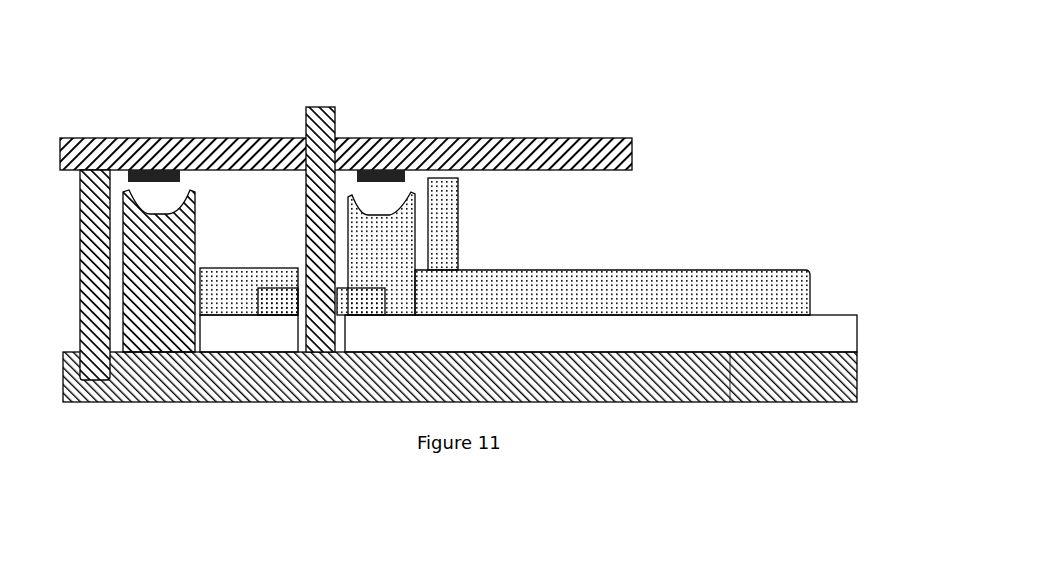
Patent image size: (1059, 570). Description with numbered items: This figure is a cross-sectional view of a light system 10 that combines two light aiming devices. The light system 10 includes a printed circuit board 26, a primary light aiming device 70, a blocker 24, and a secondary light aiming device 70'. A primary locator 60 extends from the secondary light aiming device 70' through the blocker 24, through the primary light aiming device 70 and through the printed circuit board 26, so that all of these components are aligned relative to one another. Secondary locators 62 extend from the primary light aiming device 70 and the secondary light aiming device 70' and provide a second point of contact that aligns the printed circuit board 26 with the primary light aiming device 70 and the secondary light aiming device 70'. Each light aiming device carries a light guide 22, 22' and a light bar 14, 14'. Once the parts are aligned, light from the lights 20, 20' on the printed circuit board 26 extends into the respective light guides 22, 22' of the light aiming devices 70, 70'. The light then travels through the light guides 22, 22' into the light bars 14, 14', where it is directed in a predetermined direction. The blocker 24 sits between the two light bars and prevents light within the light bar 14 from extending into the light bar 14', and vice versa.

The light system 10 is at (838, 84).
The light bar 14 is at (645, 264).
The light bar 14' is at (629, 348).
The light 20 is at (389, 132).
The light 20' is at (143, 123).
The light guide 22 is at (435, 193).
The light guide 22' is at (109, 271).
The blocker 24 is at (408, 337).
The printed circuit board 26 is at (596, 148).
The primary locator 60 is at (307, 107).
The secondary locators 62 is at (82, 296).
The primary light aiming device 70 is at (816, 176).
The secondary light aiming device 70' is at (867, 491).